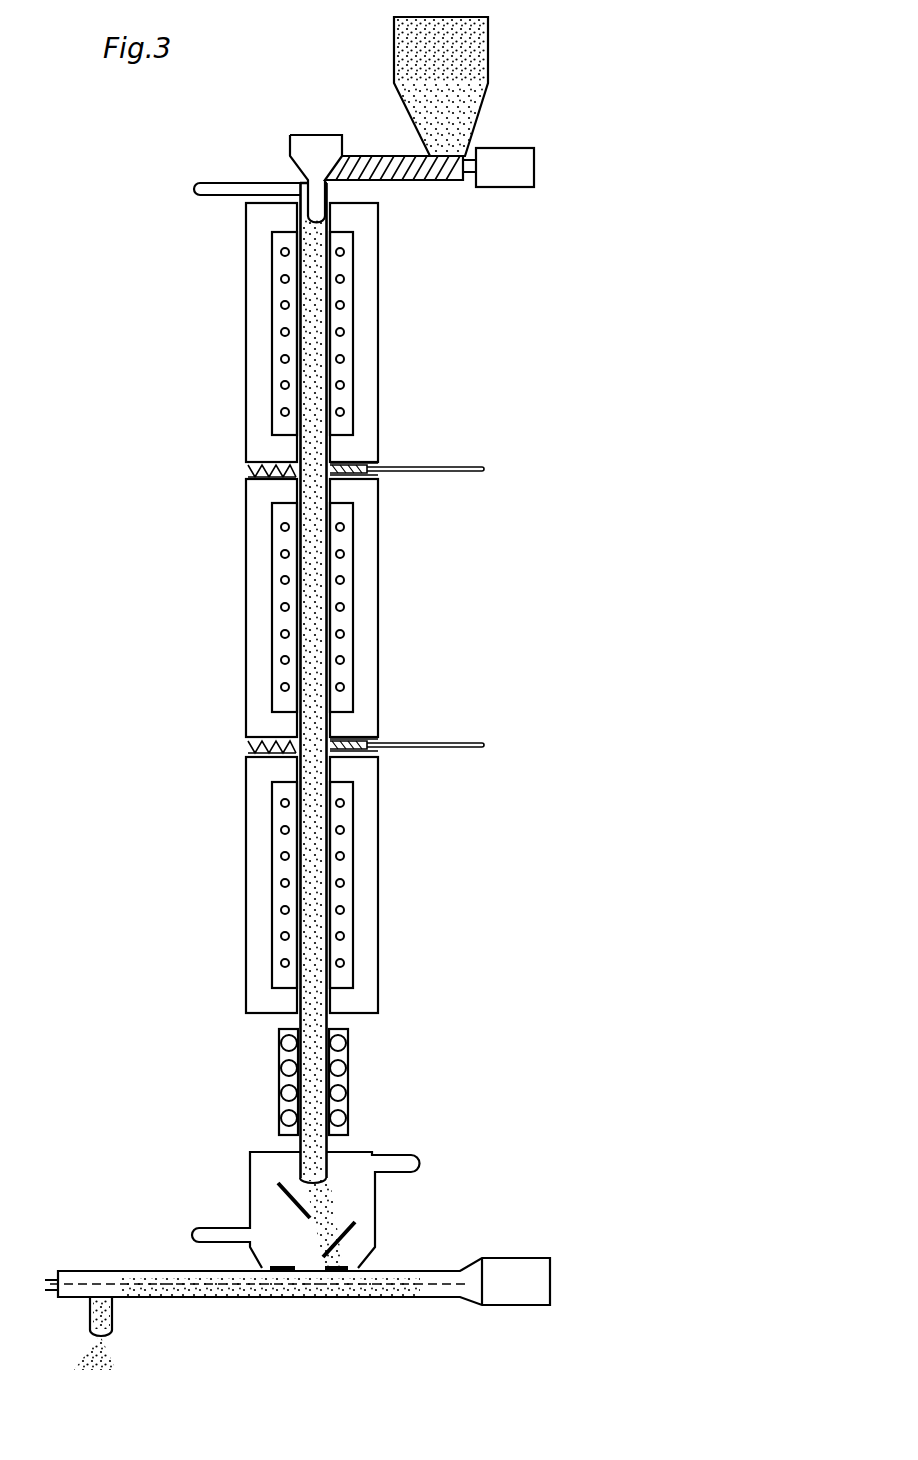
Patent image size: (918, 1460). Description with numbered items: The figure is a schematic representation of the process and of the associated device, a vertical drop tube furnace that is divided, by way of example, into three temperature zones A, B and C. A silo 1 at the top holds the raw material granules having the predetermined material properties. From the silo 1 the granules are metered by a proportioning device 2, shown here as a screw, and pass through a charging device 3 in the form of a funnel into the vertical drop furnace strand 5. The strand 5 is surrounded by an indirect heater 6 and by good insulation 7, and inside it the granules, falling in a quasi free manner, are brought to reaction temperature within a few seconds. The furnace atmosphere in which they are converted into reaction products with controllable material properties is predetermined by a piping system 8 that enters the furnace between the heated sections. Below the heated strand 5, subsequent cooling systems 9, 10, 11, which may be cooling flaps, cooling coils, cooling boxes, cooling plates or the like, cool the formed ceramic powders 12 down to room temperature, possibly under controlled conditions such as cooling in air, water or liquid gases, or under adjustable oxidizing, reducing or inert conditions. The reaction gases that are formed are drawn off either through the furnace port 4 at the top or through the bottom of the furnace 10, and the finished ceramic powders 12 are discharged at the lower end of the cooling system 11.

The silo 1 is at (467, 38).
The proportioning device 2 is at (516, 163).
The charging device 3 is at (303, 157).
The furnace port 4 is at (198, 190).
The drop furnace strand 5 is at (318, 281).
The indirect heater 6 is at (340, 335).
The insulation 7 is at (365, 387).
The piping system 8 is at (608, 745).
The cooling system 9 is at (342, 1078).
The cooling system (bottom of the furnace) 10 is at (360, 1177).
The cooling system 11 is at (537, 1279).
The ceramic powders 12 is at (115, 1360).
The temperature zone A is at (305, 340).
The temperature zone B is at (307, 615).
The temperature zone C is at (307, 868).